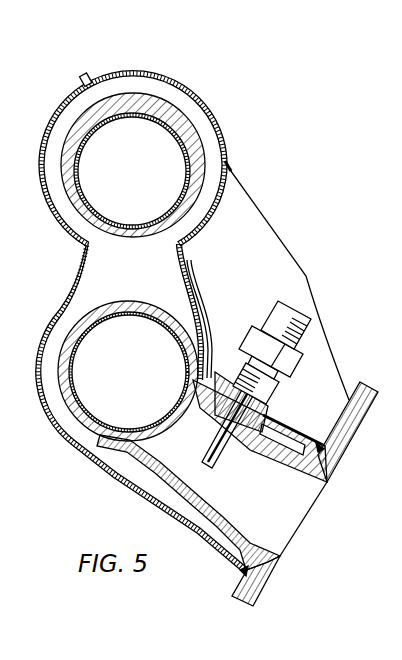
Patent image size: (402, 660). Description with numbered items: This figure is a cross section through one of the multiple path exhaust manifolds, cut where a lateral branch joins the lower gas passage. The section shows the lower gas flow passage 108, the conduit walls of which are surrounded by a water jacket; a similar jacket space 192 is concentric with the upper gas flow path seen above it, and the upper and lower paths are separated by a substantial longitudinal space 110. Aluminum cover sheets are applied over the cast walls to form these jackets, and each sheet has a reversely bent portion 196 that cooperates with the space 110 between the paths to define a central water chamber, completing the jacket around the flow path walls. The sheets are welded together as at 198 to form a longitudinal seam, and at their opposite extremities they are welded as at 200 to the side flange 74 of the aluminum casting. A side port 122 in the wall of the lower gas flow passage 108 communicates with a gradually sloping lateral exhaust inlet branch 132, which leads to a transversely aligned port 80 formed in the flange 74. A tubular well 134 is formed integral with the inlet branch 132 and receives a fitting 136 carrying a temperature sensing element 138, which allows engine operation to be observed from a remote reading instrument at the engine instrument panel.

The side flange 74 is at (350, 430).
The transversely aligned ports 80 is at (284, 554).
The lower gas flow passage 108 is at (90, 402).
The longitudinal space 110 is at (103, 267).
The side openings or ports 122 is at (128, 432).
The additional exhaust inlet branches 132 is at (211, 518).
The tubular well 134 is at (265, 401).
The fitting 136 is at (252, 330).
The temperature sensing element 138 is at (210, 478).
The water jacket space 192 is at (188, 104).
The reversely bent portion 196 is at (78, 247).
The weld 198 is at (88, 75).
The weld 200 is at (322, 446).